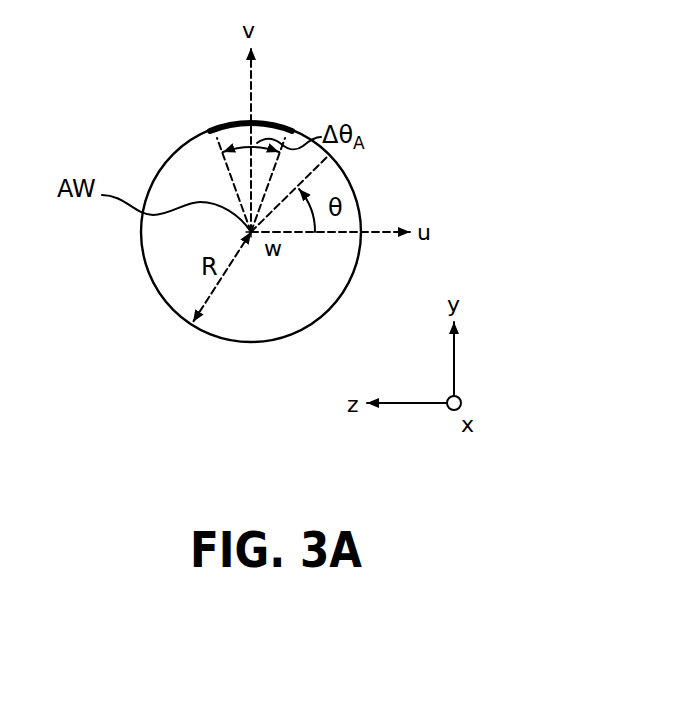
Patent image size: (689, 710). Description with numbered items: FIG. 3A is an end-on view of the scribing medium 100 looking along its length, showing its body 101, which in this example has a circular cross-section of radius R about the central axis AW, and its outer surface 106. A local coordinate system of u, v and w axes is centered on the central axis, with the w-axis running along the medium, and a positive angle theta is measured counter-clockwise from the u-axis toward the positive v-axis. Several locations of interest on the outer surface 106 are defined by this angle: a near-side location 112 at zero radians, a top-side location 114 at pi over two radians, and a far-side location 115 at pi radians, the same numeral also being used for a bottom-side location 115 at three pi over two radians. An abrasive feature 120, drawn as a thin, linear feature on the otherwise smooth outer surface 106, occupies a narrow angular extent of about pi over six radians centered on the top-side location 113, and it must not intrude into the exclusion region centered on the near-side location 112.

The scribing medium 100 is at (142, 92).
The body 101 is at (182, 288).
The outer surface 106 is at (168, 162).
The near-side location 112 is at (375, 225).
The top-side location 113 is at (240, 113).
The top-side location 114 is at (130, 228).
The far-side location 115 is at (253, 348).
The abrasive feature 120 is at (268, 122).